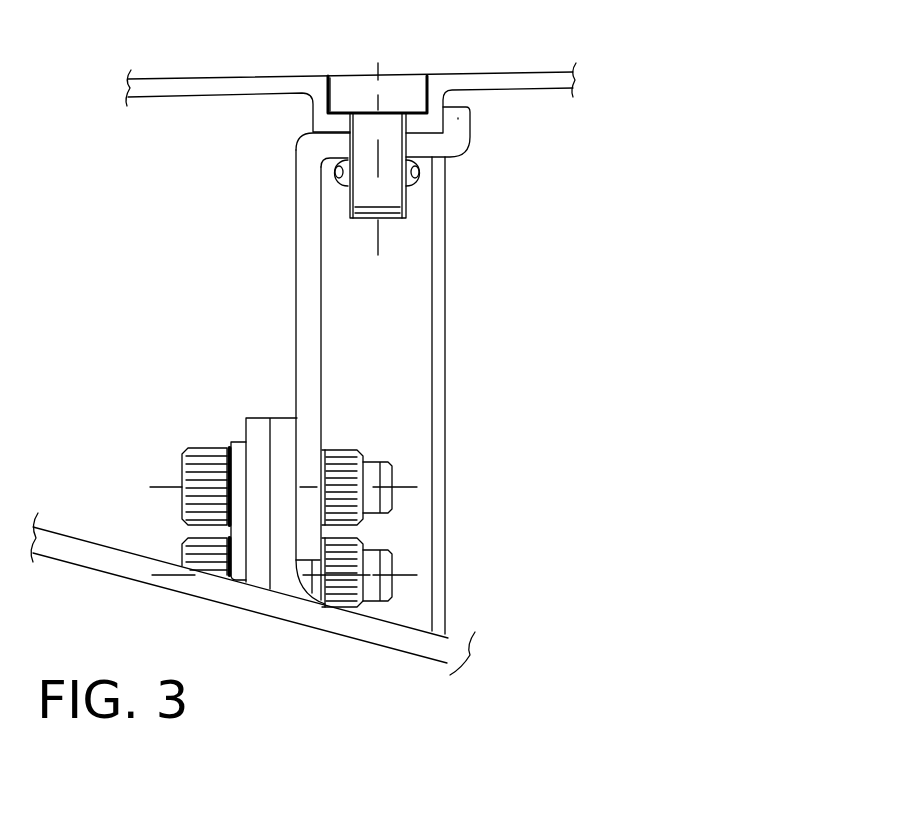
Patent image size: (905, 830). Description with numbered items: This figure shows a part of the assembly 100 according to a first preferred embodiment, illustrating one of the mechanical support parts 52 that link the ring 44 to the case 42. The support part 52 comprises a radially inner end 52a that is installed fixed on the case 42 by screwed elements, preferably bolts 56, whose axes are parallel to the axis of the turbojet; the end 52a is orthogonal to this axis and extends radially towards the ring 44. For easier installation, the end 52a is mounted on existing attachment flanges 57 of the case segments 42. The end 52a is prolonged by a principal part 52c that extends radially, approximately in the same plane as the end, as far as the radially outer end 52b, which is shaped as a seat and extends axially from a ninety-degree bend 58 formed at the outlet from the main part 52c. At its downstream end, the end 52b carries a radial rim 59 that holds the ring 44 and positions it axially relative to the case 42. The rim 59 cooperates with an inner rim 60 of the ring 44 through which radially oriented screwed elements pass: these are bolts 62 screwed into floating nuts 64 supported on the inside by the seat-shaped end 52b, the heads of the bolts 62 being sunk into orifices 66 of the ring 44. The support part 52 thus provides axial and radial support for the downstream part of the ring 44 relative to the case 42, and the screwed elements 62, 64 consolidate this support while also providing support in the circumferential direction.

The mounting structure 100 is at (182, 340).
The ring 44 is at (232, 83).
The orifices 66 is at (338, 90).
The bolts 62 is at (387, 83).
The inner rim 60 is at (413, 123).
The 90° bend 58 is at (306, 147).
The radial rim 59 is at (458, 118).
The radially outer end 52b is at (422, 147).
The principal part 52c is at (305, 245).
The floating nuts 64 is at (407, 202).
The mechanical support parts 52 is at (336, 303).
The attachment flanges 57 is at (282, 427).
The radially inner end 52a is at (325, 448).
The bolts 56 is at (367, 500).
The case 42 is at (311, 597).